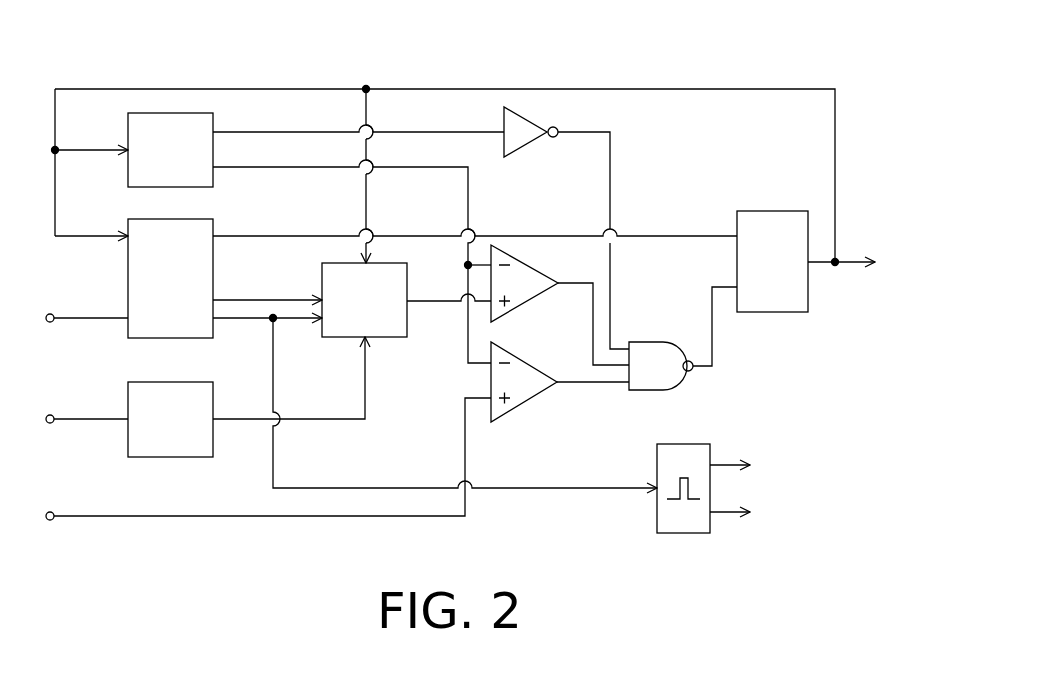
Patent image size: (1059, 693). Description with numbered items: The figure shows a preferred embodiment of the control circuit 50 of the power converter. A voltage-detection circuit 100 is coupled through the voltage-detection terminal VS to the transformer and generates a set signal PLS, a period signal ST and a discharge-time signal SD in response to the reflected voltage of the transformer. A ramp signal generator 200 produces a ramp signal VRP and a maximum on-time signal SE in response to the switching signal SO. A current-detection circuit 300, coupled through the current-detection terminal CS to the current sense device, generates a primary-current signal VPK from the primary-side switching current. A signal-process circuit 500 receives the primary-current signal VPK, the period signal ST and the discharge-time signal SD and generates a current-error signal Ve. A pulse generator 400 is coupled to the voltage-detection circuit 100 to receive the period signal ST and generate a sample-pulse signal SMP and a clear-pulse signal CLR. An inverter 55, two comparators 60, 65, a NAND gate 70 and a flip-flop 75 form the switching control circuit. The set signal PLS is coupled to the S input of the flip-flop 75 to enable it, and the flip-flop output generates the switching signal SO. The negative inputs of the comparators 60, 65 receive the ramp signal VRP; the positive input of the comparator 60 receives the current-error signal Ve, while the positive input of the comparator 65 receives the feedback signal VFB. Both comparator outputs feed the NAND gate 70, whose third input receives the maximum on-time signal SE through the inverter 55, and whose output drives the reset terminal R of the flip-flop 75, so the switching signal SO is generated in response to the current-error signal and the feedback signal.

The control circuit 50 is at (813, 42).
The voltage-detection circuit 100 is at (160, 219).
The ramp signal generator 200 is at (128, 121).
The current-detection circuit 300 is at (168, 457).
The pulse generator 400 is at (685, 444).
The signal-process circuit 500 is at (391, 337).
The inverter 55 is at (529, 148).
The comparator 60 is at (530, 262).
The comparator 65 is at (525, 400).
The NAND gate 70 is at (646, 342).
The flip-flop 75 is at (772, 211).